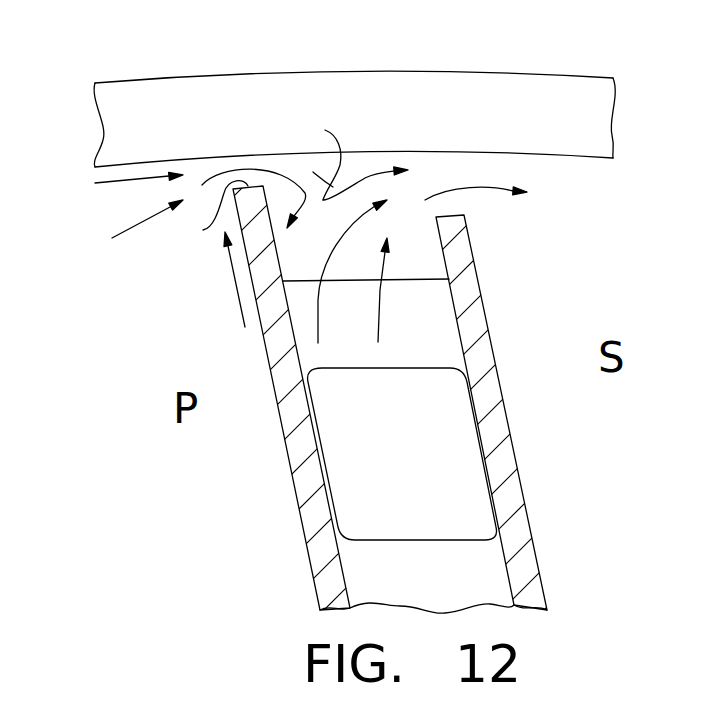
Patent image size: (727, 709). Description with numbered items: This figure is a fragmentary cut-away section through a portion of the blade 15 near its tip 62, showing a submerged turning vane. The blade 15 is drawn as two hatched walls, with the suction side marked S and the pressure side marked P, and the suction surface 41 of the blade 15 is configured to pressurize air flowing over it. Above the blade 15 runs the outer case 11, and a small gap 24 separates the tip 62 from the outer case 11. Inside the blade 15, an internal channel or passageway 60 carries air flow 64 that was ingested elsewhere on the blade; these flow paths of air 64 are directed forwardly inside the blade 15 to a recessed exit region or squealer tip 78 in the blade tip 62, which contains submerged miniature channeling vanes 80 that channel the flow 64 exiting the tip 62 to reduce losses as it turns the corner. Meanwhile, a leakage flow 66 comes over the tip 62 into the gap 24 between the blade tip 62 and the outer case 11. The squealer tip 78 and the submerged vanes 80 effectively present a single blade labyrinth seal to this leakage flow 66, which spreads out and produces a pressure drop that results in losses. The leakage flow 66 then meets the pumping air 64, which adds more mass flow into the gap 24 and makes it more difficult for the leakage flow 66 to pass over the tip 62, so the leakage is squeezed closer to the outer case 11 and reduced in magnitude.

The outer case 11 is at (517, 70).
The gap 24 is at (365, 163).
The leakage flow 66 is at (262, 167).
The air flow 64 is at (481, 190).
The tip 62 is at (208, 214).
The squealer tip 78 is at (420, 262).
The channeling vanes 80 is at (425, 330).
The internal passageways 60 is at (425, 467).
The suction surface 41 is at (295, 485).
The blade 15 is at (545, 516).